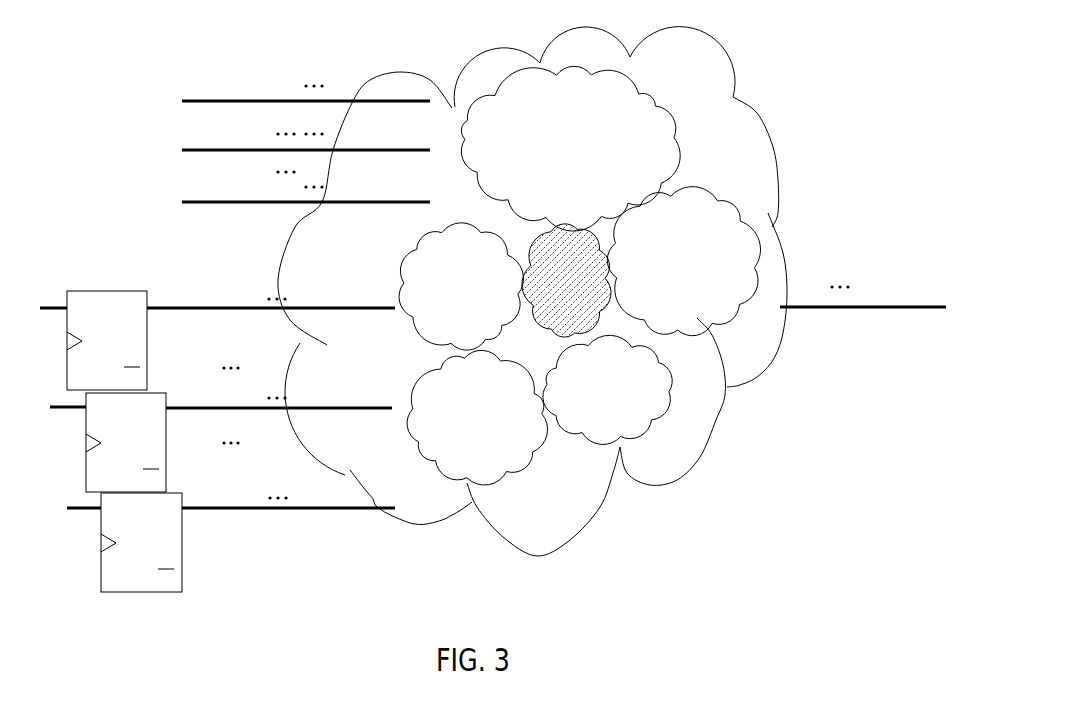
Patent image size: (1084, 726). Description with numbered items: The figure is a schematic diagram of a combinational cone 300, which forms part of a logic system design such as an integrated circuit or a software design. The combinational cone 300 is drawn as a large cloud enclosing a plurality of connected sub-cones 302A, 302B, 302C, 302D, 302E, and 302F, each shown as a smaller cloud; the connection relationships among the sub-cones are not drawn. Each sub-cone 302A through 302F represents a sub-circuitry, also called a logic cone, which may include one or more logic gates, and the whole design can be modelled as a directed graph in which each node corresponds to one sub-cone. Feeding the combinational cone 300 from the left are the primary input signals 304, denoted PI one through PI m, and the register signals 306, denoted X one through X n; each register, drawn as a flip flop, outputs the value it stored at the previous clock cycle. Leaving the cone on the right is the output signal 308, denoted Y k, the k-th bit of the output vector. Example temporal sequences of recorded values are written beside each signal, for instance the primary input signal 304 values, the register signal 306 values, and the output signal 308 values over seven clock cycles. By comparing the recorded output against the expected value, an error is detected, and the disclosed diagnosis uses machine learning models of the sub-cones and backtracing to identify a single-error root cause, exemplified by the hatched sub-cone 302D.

The combinational cone 300 is at (532, 289).
The sub-cone 302A is at (570, 148).
The sub-cone 302B is at (461, 286).
The sub-cone 302C is at (477, 417).
The sub-cone 302D is at (568, 280).
The sub-cone 302E is at (607, 389).
The sub-cone 302F is at (683, 261).
The primary input signals 304 is at (278, 140).
The register signals 306 is at (217, 430).
The output signal 308 is at (863, 274).